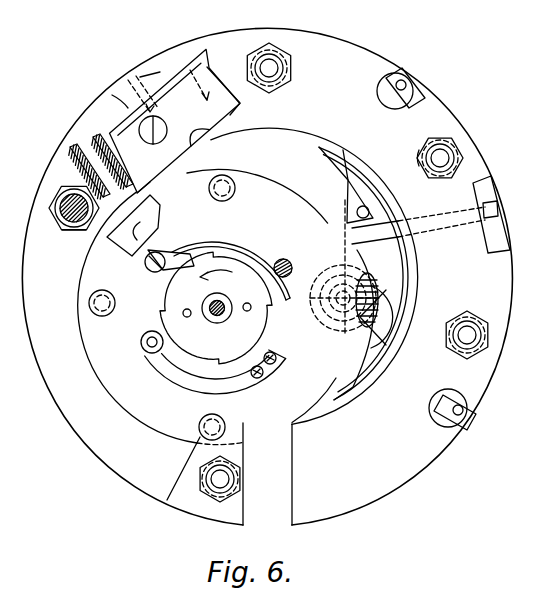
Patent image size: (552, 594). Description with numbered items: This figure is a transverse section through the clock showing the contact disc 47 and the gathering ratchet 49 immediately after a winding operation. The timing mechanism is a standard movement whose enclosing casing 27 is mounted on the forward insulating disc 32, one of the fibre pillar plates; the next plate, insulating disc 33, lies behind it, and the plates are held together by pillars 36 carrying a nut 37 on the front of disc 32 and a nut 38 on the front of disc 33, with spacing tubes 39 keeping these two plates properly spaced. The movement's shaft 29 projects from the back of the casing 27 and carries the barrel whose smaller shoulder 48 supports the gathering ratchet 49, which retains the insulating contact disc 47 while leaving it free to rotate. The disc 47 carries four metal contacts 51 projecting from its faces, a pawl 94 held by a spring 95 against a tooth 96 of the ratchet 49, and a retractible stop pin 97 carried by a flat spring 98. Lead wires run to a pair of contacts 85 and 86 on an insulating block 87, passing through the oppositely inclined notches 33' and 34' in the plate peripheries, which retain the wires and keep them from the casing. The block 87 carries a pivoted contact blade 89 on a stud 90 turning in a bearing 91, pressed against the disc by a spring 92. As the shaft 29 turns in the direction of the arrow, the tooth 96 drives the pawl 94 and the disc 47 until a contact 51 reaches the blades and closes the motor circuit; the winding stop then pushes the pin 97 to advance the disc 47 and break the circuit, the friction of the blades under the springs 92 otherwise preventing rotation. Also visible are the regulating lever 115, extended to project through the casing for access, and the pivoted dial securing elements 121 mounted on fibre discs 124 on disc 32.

The casing 27 is at (406, 266).
The shaft 29 is at (224, 303).
The insulating disc 32 is at (458, 124).
The insulating disc 33 is at (267, 276).
The notch 33' is at (110, 80).
The notch 34' is at (164, 59).
The pillar 36 is at (443, 160).
The nut 37 is at (244, 480).
The nut 38 is at (74, 240).
The spacing tube 39 is at (62, 232).
The contact disc 47 is at (272, 197).
The shoulder 48 is at (232, 316).
The gathering ratchet 49 is at (234, 266).
The contact 51 is at (99, 317).
The contact 85 is at (178, 60).
The contact 86 is at (122, 96).
The insulating block 87 is at (232, 115).
The contact blade 89 is at (128, 252).
The stud 90 is at (85, 170).
The bearing 91 is at (84, 147).
The spring 92 is at (152, 189).
The pawl 94 is at (160, 276).
The spring 95 is at (208, 250).
The tooth 96 is at (273, 307).
The stop pin 97 is at (152, 352).
The flat spring 98 is at (190, 394).
The regulating lever 115 is at (505, 202).
The securing element 121 is at (423, 96).
The fibre disc 124 is at (392, 103).